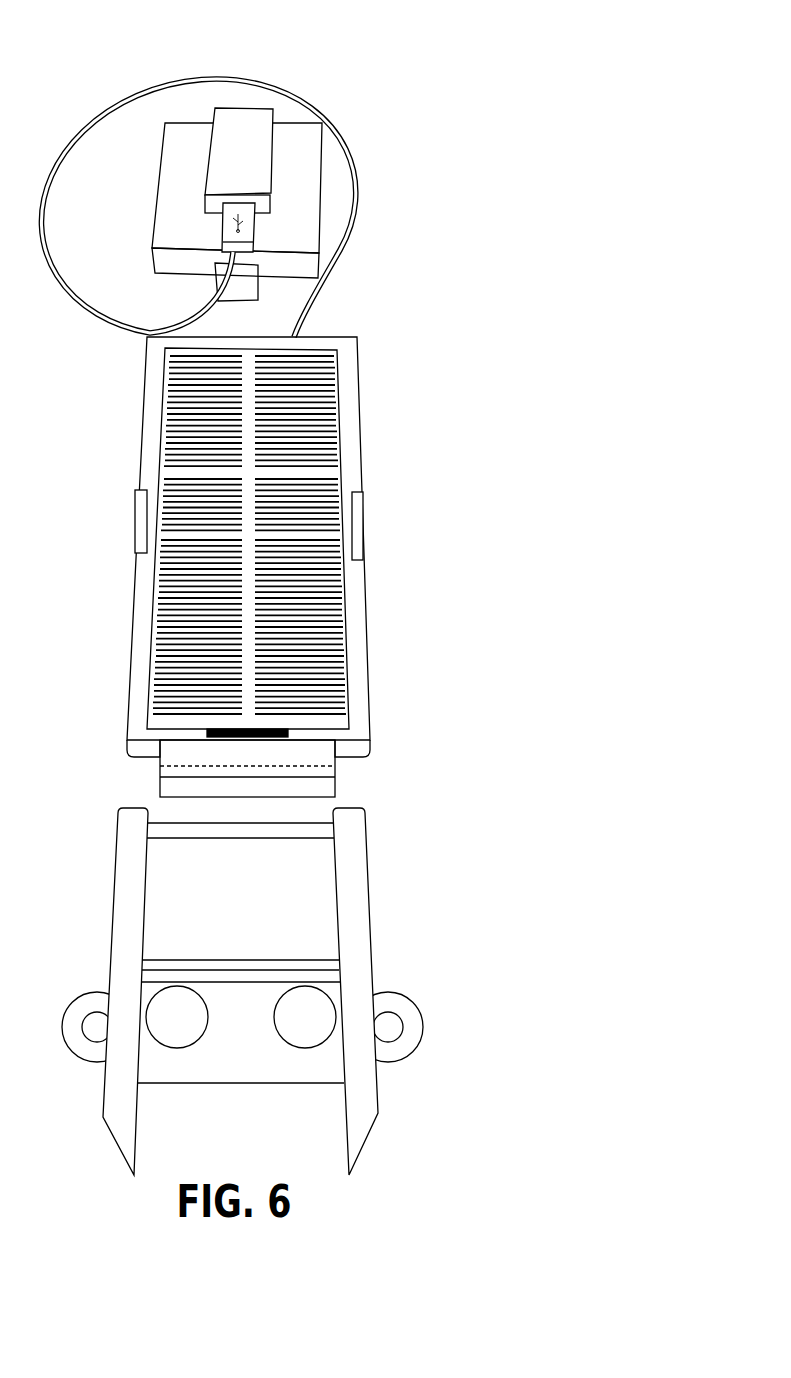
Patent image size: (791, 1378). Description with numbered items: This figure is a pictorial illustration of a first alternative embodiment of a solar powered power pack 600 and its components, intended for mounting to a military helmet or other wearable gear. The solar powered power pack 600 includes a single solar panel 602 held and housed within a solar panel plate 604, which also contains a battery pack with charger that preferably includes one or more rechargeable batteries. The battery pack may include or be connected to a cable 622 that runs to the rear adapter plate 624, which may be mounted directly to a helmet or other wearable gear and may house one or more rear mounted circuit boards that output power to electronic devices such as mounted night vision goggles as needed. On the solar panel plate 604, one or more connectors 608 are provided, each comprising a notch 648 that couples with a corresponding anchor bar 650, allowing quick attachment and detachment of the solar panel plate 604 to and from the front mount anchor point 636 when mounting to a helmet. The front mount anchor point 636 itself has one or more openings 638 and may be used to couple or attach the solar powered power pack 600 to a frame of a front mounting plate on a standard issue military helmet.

The solar powered power pack 600 is at (372, 89).
The solar panel 602 is at (319, 440).
The solar panel plate 604 is at (365, 617).
The connectors 608 is at (314, 756).
The cable 622 is at (347, 222).
The rear adapter plate 624 is at (191, 142).
The front mount anchor point 636 is at (352, 865).
The openings 638 is at (172, 1019).
The notch 648 is at (176, 774).
The anchor bar 650 is at (189, 834).